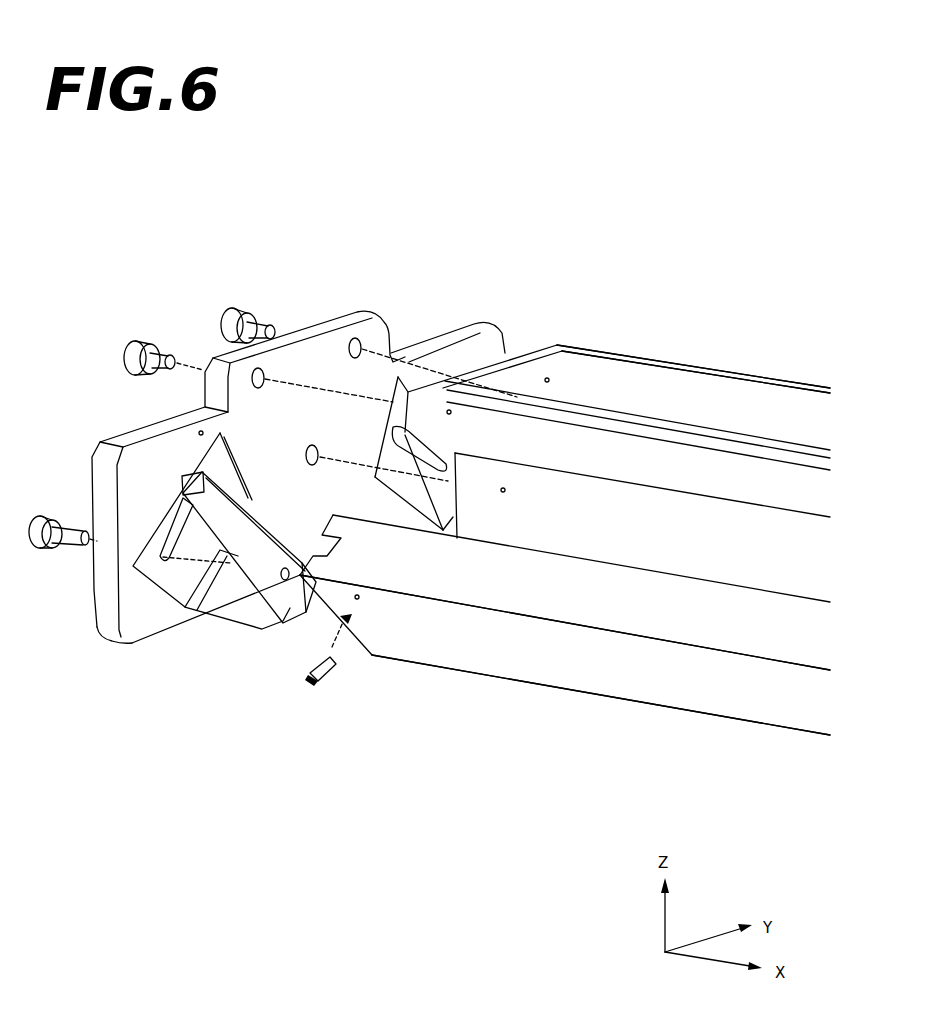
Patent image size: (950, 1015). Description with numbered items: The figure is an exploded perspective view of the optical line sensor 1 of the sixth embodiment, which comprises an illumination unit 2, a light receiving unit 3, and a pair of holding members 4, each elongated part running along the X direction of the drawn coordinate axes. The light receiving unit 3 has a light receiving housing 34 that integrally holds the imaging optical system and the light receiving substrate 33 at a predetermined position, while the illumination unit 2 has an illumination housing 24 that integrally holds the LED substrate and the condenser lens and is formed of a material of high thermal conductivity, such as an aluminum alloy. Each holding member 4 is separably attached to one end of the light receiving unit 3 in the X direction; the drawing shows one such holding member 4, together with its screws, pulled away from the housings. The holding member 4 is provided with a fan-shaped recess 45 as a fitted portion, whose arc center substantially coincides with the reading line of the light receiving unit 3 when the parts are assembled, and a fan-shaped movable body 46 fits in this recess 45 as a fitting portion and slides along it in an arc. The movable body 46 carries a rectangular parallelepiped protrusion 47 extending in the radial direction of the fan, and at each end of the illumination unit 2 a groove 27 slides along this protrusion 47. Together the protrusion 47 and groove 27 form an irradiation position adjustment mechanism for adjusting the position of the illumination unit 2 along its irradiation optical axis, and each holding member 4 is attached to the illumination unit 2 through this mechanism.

The optical line sensor 1 is at (554, 184).
The illumination unit 2 is at (665, 720).
The light receiving unit 3 is at (761, 362).
The holding member 4 is at (112, 665).
The illumination housing 24 is at (555, 673).
The groove 27 is at (322, 550).
The light receiving substrate 33 is at (701, 381).
The light receiving housing 34 is at (634, 352).
The fan-shaped recess 45 is at (391, 352).
The fan-shaped movable body 46 is at (258, 617).
The rectangular parallelepiped protrusion 47 is at (236, 499).